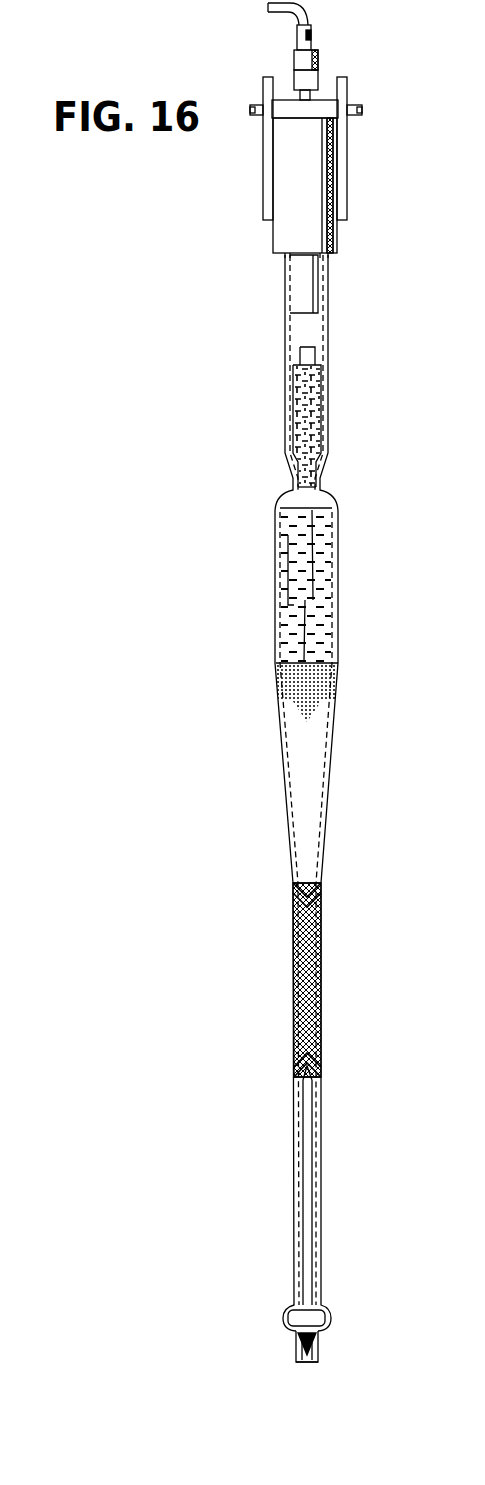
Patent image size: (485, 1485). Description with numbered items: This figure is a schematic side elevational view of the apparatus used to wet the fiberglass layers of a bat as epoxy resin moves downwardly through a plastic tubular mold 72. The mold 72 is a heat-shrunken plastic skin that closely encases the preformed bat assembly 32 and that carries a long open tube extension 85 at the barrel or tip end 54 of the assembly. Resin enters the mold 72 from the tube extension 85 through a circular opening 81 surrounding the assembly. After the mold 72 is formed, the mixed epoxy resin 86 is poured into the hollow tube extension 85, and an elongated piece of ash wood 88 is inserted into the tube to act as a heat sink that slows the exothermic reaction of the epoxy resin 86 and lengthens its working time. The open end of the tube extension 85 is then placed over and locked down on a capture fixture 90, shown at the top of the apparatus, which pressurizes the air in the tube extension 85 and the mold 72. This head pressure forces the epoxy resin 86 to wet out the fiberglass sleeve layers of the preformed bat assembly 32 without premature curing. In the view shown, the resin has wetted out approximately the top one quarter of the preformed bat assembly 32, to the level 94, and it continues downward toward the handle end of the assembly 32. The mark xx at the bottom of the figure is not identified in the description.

The capture fixture 90 is at (236, 205).
The tube extension 85 is at (288, 340).
The epoxy resin 86 is at (291, 380).
The piece of ash wood 88 is at (313, 413).
The circular opening 81 is at (322, 470).
The tip end 54 is at (282, 493).
The level 94 is at (282, 655).
The preformed bat assembly 32 is at (306, 762).
The plastic tubular mold 72 is at (340, 743).
The distal tip xx is at (308, 1364).